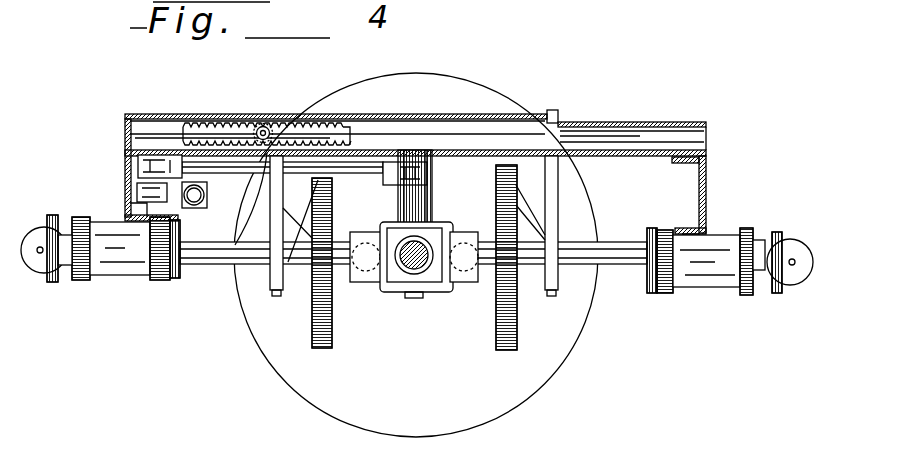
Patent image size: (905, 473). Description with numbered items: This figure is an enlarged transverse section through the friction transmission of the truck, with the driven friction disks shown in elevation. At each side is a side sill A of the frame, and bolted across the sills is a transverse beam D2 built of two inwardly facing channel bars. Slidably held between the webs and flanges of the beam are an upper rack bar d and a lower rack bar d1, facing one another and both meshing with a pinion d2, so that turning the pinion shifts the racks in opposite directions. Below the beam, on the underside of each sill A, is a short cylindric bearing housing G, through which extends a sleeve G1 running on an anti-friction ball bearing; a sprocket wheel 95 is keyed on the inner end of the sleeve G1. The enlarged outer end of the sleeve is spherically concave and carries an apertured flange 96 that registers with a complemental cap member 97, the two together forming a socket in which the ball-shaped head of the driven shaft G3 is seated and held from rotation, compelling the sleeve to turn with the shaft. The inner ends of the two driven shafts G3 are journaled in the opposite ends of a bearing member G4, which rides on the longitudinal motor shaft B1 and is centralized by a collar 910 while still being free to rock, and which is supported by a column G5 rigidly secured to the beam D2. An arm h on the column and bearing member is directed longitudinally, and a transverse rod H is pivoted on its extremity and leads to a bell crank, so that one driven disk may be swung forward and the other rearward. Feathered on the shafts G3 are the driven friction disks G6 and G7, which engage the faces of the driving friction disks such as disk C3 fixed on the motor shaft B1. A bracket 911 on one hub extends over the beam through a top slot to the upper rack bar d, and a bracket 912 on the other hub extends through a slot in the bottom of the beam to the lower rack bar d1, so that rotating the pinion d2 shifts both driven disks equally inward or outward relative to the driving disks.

The driving friction disk C3 is at (383, 408).
The driven shaft G3 is at (642, 215).
The transverse beam D2 is at (638, 123).
The rack bar d is at (500, 127).
The pinion d2 is at (270, 126).
The side sill A is at (125, 152).
The rod H is at (360, 177).
The arm h is at (424, 178).
The column G5 is at (433, 170).
The rack bar d1 is at (484, 160).
The bracket 912 is at (275, 205).
The bracket 911 is at (550, 187).
The driven friction disk G6 is at (312, 315).
The driven friction disk G7 is at (523, 348).
The motor shaft B1 is at (423, 265).
The bearing member G4 is at (457, 267).
The collar 910 is at (408, 277).
The sprocket wheel 95 is at (175, 282).
The sleeve G1 is at (128, 262).
The cap member 97 is at (37, 258).
The flange 96 is at (68, 255).
The bearing housing G is at (713, 278).